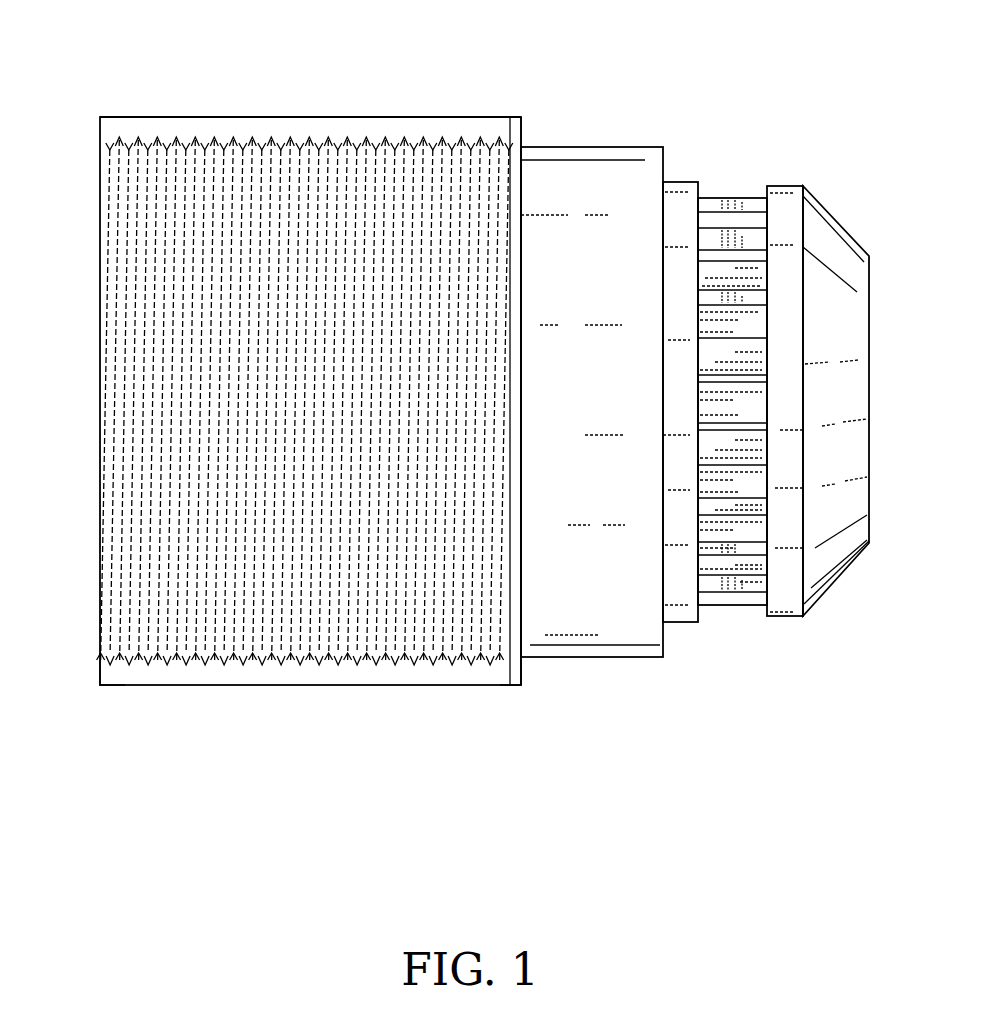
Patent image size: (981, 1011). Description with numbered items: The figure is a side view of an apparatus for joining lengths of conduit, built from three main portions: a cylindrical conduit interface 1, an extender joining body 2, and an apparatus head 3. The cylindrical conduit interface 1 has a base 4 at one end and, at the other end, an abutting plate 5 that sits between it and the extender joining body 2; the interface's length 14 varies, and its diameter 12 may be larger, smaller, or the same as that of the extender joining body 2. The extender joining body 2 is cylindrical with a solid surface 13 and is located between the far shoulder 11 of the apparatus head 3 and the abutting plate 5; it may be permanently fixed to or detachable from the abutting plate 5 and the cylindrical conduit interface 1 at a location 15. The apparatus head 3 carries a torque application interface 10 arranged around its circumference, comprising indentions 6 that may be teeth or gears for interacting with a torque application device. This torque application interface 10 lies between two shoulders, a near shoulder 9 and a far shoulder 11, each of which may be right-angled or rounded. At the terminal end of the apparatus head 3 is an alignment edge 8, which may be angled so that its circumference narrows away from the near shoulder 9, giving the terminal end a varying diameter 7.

The cylindrical conduit interface 1 is at (309, 481).
The extender joining body 2 is at (591, 496).
The apparatus head 3 is at (783, 816).
The base 4 is at (100, 682).
The abutting plate 5 is at (522, 670).
The indentions 6 is at (750, 525).
The varying diameter 7 is at (912, 401).
The alignment edge 8 is at (846, 230).
The near shoulder 9 is at (786, 186).
The torque application interface 10 is at (730, 198).
The far shoulder 11 is at (680, 182).
The diameter of the cylindrical conduit interface 12 is at (43, 403).
The solid surface 13 is at (605, 147).
The length of the cylindrical conduit interface 14 is at (293, 117).
The attachment location 15 is at (521, 147).